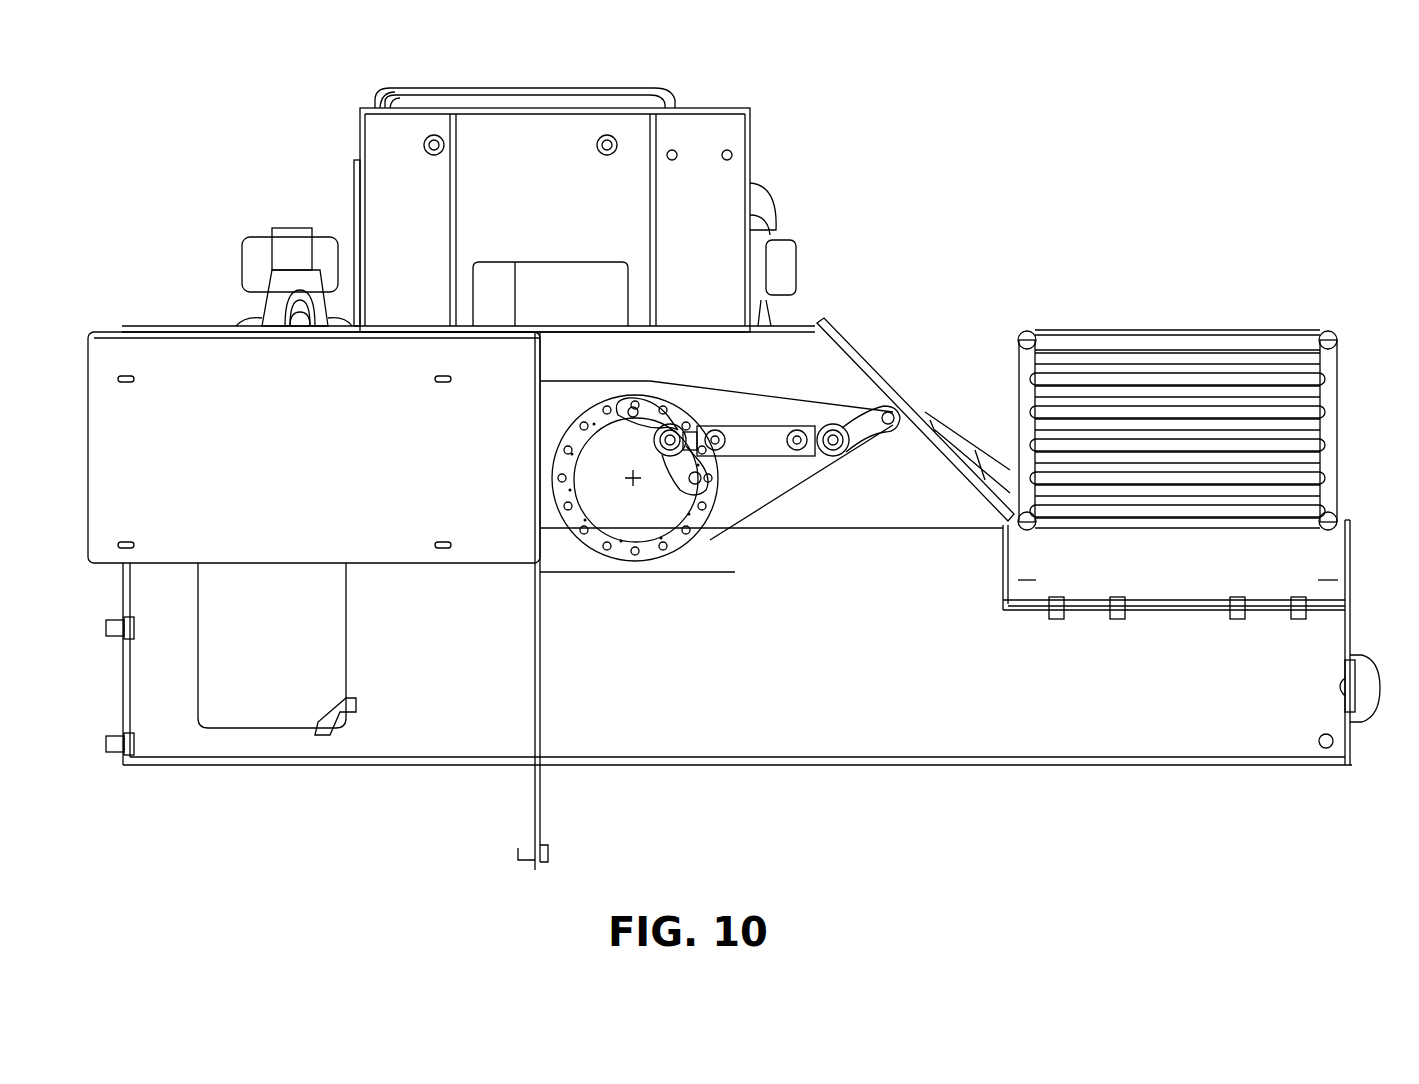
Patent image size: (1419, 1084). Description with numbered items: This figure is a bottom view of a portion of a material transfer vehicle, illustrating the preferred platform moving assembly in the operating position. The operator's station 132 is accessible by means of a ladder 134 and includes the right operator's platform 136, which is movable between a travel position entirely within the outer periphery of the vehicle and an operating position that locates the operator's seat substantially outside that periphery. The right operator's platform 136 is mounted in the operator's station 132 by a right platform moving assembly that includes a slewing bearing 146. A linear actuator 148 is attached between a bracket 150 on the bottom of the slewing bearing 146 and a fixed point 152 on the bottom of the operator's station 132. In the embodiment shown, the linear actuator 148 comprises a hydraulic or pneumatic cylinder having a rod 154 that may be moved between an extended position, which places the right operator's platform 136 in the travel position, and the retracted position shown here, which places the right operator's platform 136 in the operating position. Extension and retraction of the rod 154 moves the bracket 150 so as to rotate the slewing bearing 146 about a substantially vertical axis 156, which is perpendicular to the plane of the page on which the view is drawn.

The operator's station 132 is at (835, 338).
The ladder 134 is at (1197, 320).
The right operator's platform 136 is at (689, 138).
The slewing bearing 146 is at (608, 557).
The linear actuator 148 is at (766, 459).
The bracket 150 is at (649, 420).
The fixed point 152 is at (887, 410).
The rod 154 is at (665, 455).
The substantially vertical axis 156 is at (622, 485).